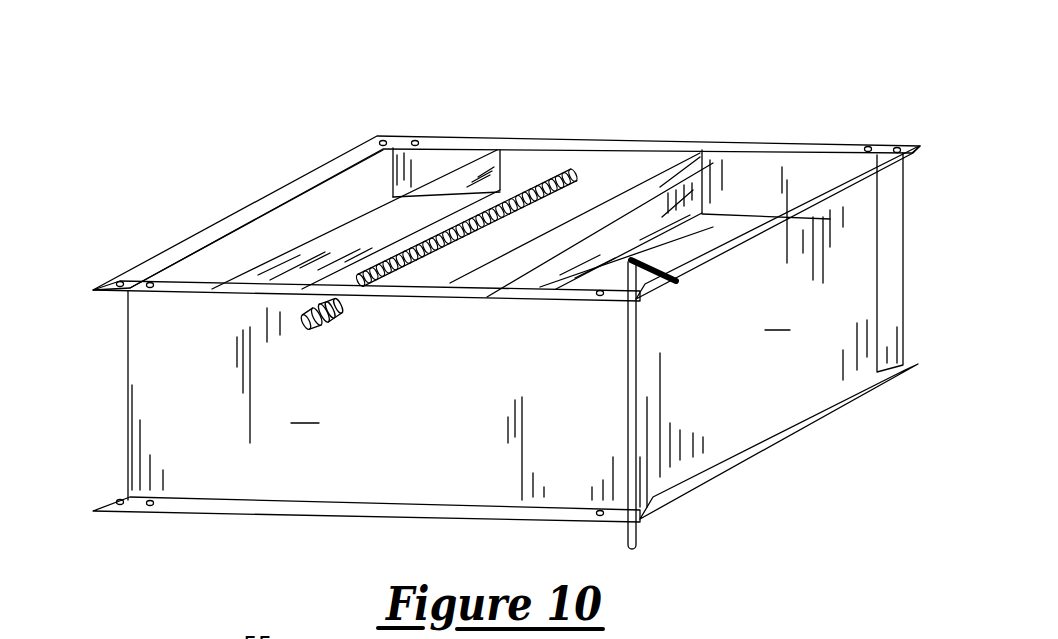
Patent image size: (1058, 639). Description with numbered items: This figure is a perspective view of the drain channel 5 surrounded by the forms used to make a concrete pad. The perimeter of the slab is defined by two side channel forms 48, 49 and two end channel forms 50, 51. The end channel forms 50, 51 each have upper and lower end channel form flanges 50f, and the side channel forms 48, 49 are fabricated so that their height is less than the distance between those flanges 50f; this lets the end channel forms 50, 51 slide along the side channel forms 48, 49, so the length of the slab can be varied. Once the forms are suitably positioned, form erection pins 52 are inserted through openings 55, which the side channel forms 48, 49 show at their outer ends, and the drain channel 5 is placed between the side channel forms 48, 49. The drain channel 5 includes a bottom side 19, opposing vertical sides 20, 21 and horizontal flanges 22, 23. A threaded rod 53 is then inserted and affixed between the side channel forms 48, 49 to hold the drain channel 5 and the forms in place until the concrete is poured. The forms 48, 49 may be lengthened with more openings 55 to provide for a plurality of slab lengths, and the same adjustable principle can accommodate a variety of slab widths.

The drain channel 5 is at (600, 103).
The bottom side 19 is at (395, 255).
The vertical side 20 is at (413, 210).
The vertical side 21 is at (648, 200).
The horizontal flange 22 is at (697, 157).
The horizontal flange 23 is at (482, 138).
The side channel form 48 is at (370, 395).
The side channel form 49 is at (803, 172).
The end channel form 50 is at (771, 330).
The end channel form flange 50f is at (627, 300).
The end channel form 51 is at (233, 253).
The form erection pin 52 is at (633, 532).
The threaded rod 53 is at (343, 318).
The opening 55 is at (150, 296).